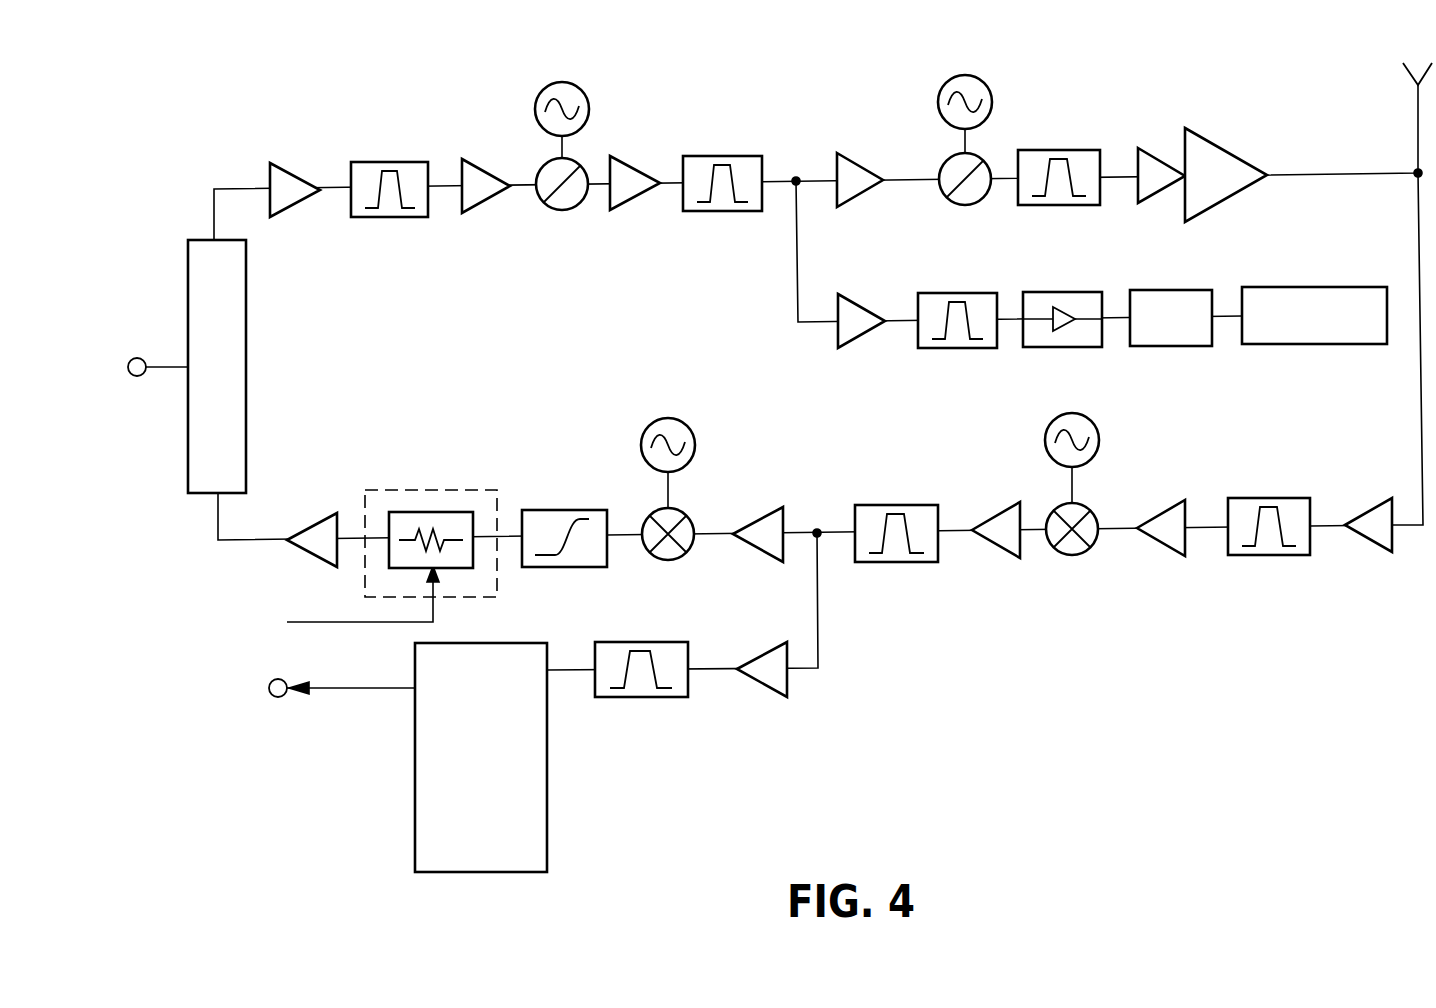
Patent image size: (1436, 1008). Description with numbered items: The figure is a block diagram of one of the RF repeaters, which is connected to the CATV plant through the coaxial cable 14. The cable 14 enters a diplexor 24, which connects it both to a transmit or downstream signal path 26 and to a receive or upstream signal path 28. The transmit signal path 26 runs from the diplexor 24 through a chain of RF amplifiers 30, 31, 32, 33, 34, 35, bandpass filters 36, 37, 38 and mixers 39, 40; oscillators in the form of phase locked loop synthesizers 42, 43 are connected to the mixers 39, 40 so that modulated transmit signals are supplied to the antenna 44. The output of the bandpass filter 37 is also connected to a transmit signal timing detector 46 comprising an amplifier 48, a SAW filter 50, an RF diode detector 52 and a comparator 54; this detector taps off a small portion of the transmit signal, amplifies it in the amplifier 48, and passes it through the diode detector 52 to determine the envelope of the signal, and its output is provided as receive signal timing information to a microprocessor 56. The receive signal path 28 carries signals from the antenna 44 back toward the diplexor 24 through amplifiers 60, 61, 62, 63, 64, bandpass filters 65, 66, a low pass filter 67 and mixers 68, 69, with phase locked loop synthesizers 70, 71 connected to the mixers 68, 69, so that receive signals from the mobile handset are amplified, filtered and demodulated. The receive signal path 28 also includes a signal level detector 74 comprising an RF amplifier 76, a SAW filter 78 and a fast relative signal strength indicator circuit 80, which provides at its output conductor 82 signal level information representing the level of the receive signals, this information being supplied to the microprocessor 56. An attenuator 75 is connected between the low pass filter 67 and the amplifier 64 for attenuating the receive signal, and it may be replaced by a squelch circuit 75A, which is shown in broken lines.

The coaxial cable 14 is at (137, 358).
The diplexor 24 is at (246, 355).
The transmit signal path 26 is at (1106, 106).
The receive signal path 28 is at (953, 634).
The RF amplifier 30 is at (300, 209).
The RF amplifier 31 is at (480, 206).
The RF amplifier 32 is at (633, 204).
The RF amplifier 33 is at (858, 200).
The RF amplifier 34 is at (1157, 197).
The RF amplifier 35 is at (1235, 196).
The bandpass filter 36 is at (403, 218).
The bandpass filter 37 is at (745, 212).
The bandpass filter 38 is at (1067, 206).
The mixer 39 is at (565, 210).
The mixer 40 is at (966, 205).
The phase locked loop synthesizer 42 is at (589, 104).
The phase locked loop synthesizer 43 is at (992, 98).
The antenna 44 is at (1417, 114).
The transmit signal timing detector 46 is at (906, 408).
The amplifier 48 is at (860, 340).
The SAW filter 50 is at (975, 349).
The RF diode detector 52 is at (1080, 348).
The comparator 54 is at (1190, 347).
The microprocessor 56 is at (1295, 345).
The amplifier 60 is at (1372, 548).
The amplifier 61 is at (1165, 548).
The amplifier 62 is at (1000, 551).
The amplifier 63 is at (760, 553).
The amplifier 64 is at (306, 556).
The bandpass filter 65 is at (1280, 556).
The bandpass filter 66 is at (910, 563).
The low pass filter 67 is at (580, 568).
The mixer 68 is at (1085, 555).
The mixer 69 is at (669, 561).
The phase locked loop synthesizer 70 is at (1099, 437).
The phase locked loop synthesizer 71 is at (695, 441).
The signal level detector 74 is at (656, 776).
The attenuator 75 is at (407, 512).
The squelch circuit 75A is at (455, 489).
The RF amplifier 76 is at (763, 690).
The SAW filter 78 is at (641, 699).
The fast relative signal strength indicator circuit 80 is at (415, 800).
The output conductor 82 is at (341, 691).